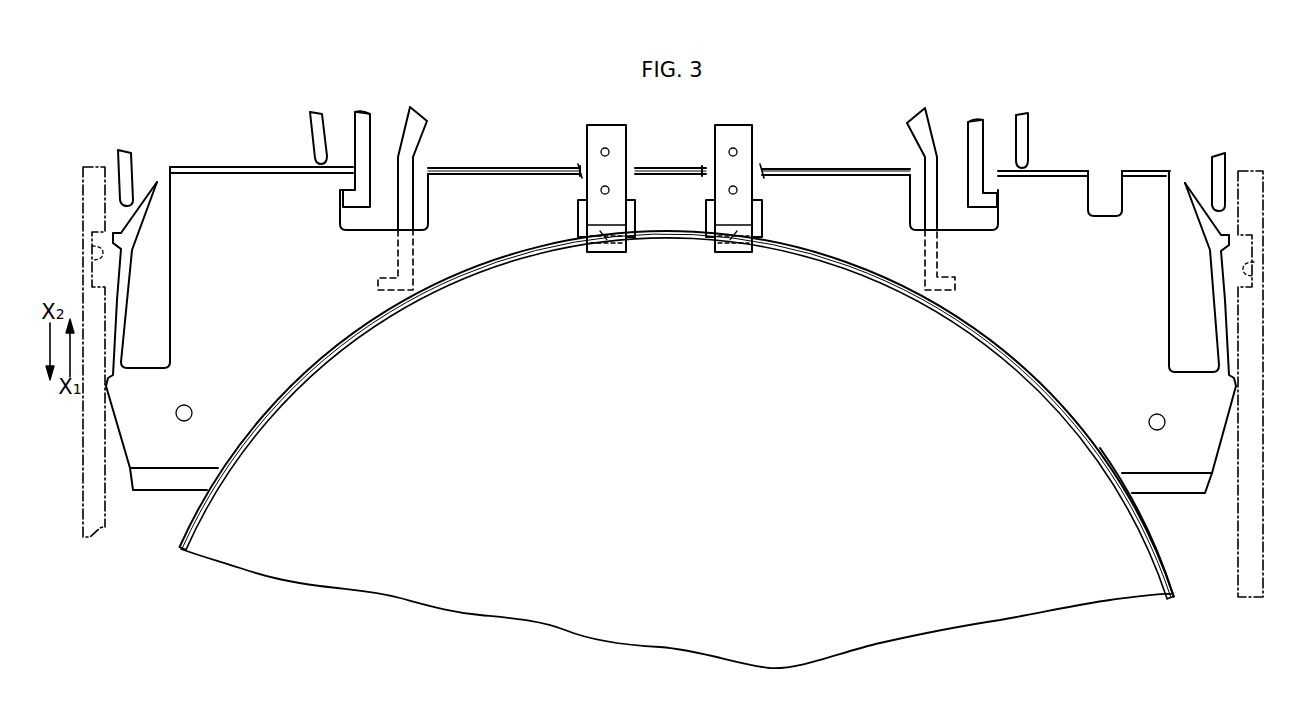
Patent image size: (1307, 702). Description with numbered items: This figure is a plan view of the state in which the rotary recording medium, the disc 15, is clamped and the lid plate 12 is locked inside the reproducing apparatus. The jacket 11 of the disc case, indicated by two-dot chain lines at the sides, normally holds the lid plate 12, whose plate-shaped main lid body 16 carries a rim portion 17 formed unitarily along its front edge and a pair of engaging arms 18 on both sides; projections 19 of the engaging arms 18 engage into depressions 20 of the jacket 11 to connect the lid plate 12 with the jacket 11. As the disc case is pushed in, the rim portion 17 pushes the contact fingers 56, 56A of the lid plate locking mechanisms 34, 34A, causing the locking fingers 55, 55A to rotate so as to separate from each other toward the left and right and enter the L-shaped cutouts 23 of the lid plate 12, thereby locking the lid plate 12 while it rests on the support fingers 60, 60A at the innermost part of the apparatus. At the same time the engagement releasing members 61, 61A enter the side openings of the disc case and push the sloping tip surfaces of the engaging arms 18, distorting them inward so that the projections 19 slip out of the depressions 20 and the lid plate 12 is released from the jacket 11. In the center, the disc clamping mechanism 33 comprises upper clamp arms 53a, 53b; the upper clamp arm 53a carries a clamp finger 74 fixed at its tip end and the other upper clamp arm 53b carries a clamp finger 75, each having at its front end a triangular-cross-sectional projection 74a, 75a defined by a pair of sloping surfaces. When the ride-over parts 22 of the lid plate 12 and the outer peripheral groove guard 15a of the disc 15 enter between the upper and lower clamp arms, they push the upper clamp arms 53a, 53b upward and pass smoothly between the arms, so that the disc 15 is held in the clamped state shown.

The jacket 11 is at (85, 441).
The lid plate 12 is at (822, 166).
The disc 15 is at (699, 449).
The outer peripheral groove guard 15a is at (1152, 526).
The main lid body 16 is at (330, 350).
The rim portion 17 is at (492, 166).
The engaging arms 18 is at (130, 293).
The projections 19 is at (120, 239).
The depressions 20 is at (98, 268).
The ride-over parts 22 is at (583, 166).
The L-shaped cutouts 23 is at (378, 222).
The disc clamping mechanism 33 is at (672, 182).
The lid plate locking mechanism 34 is at (628, 182).
The lid plate locking mechanism 34A is at (967, 182).
The upper clamp arm 53a is at (622, 160).
The upper clamp arm 53b is at (748, 189).
The locking finger 55 is at (367, 165).
The locking finger 55A is at (984, 218).
The contact finger 56 is at (311, 140).
The contact finger 56A is at (1029, 141).
The support finger 60 is at (410, 190).
The support finger 60A is at (928, 200).
The engagement releasing member 61 is at (134, 163).
The engagement releasing member 61A is at (1211, 163).
The clamp finger 74 is at (601, 208).
The triangular-cross-sectional projection 74a is at (585, 236).
The clamp finger 75 is at (712, 208).
The triangular-cross-sectional projection 75a is at (757, 236).